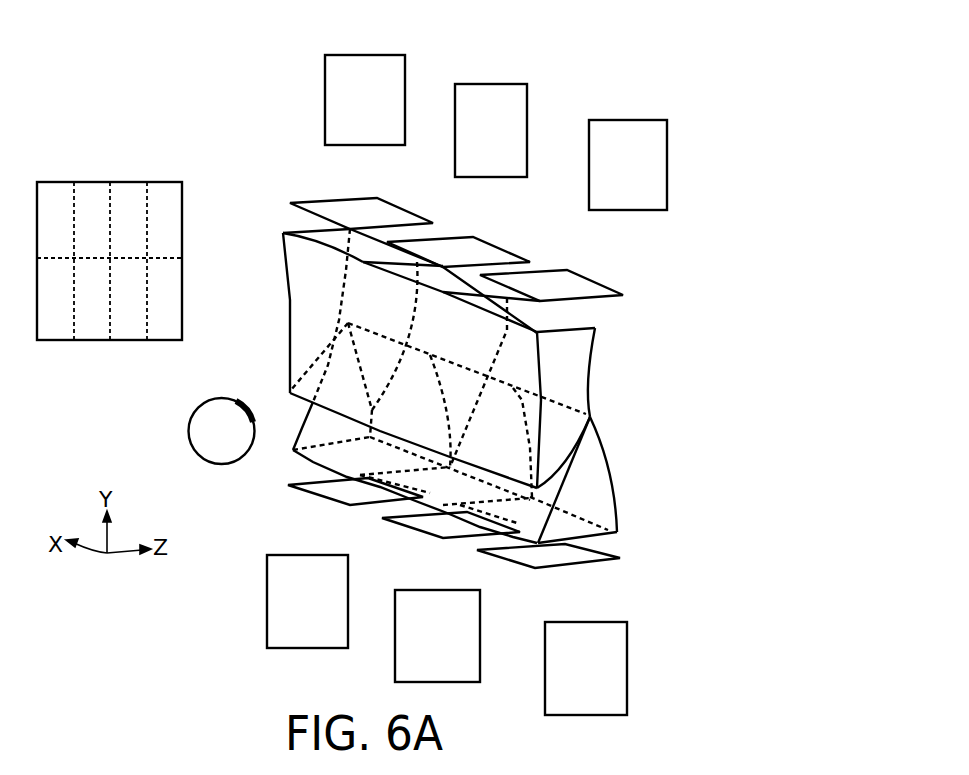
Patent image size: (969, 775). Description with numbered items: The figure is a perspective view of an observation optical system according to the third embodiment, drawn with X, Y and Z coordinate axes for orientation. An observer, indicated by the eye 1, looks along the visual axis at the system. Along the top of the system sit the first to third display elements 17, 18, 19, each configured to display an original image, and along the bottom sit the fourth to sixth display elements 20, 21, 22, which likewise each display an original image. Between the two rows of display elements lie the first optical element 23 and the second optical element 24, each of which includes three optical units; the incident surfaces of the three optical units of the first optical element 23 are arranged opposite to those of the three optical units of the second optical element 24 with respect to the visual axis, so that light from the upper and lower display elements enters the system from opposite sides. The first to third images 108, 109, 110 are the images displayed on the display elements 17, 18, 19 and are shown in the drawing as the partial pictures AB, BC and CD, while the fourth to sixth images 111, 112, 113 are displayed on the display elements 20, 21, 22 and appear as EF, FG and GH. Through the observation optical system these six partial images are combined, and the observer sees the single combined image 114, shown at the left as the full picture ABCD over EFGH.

The eye of observer 1 is at (203, 420).
The first display element 17 is at (345, 208).
The second display element 18 is at (487, 248).
The third display element 19 is at (577, 287).
The fourth display element 20 is at (313, 488).
The fifth display element 21 is at (423, 517).
The sixth display element 22 is at (567, 555).
The first optical element 23 is at (296, 277).
The second optical element 24 is at (590, 472).
The first image 108 is at (369, 62).
The second image 109 is at (500, 93).
The third image 110 is at (627, 128).
The fourth image 111 is at (272, 640).
The fifth image 112 is at (402, 678).
The sixth image 113 is at (560, 638).
The combined image 114 is at (55, 187).